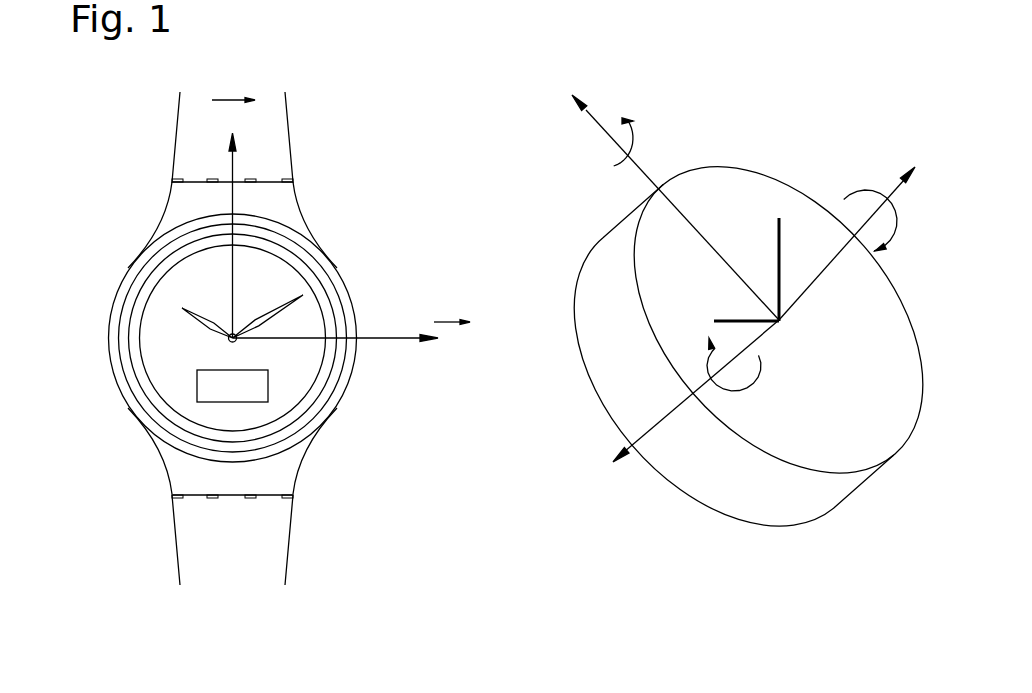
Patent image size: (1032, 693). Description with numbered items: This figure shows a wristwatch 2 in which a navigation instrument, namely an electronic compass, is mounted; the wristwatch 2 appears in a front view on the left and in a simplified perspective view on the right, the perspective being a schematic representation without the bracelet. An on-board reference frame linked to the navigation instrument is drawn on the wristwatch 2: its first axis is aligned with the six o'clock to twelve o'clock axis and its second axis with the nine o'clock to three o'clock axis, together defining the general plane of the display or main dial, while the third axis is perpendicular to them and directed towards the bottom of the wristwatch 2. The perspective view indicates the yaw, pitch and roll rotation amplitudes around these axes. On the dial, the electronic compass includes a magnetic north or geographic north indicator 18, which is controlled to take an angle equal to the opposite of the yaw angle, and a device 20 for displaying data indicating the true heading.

The wristwatch 2 is at (73, 200).
The magnetic north or geographic north indicator 18 is at (257, 325).
The device for displaying data indicating the true heading 20 is at (265, 385).